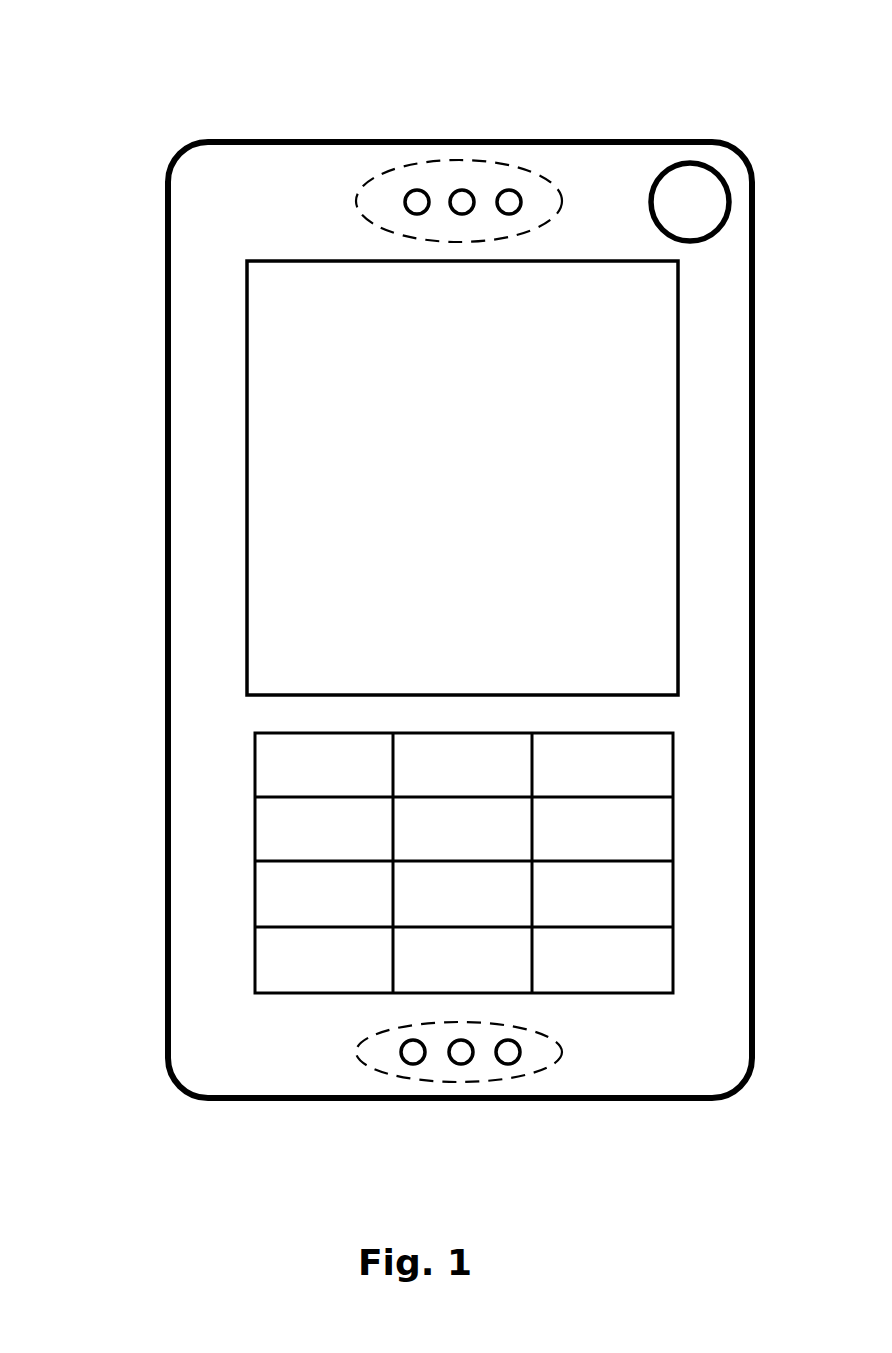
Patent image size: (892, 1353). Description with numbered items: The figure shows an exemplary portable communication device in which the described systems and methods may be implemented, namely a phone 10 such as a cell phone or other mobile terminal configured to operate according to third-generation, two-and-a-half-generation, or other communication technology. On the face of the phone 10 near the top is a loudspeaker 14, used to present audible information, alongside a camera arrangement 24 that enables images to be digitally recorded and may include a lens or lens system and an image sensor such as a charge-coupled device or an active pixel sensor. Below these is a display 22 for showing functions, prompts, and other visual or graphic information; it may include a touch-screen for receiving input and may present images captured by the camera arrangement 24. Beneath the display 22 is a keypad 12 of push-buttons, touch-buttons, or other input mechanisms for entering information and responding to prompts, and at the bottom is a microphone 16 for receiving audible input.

The phone 10 is at (242, 104).
The keypad 12 is at (272, 752).
The loudspeaker 14 is at (485, 174).
The microphone 16 is at (437, 1068).
The display 22 is at (483, 492).
The camera arrangement 24 is at (683, 175).